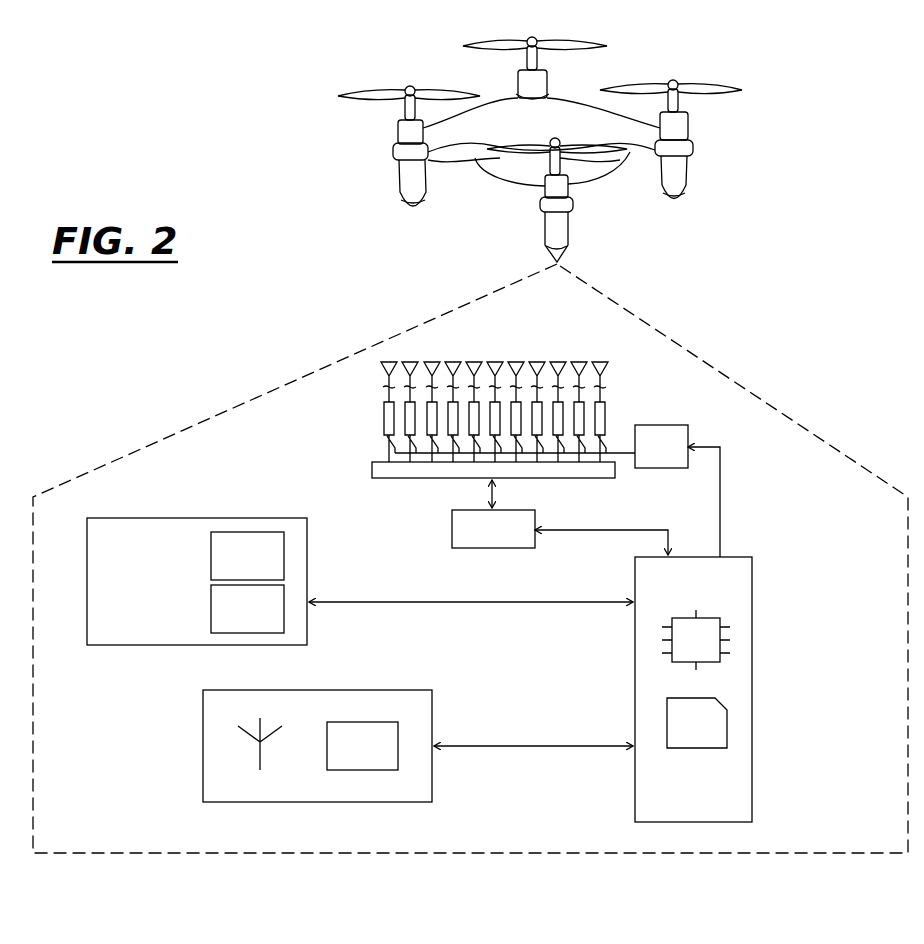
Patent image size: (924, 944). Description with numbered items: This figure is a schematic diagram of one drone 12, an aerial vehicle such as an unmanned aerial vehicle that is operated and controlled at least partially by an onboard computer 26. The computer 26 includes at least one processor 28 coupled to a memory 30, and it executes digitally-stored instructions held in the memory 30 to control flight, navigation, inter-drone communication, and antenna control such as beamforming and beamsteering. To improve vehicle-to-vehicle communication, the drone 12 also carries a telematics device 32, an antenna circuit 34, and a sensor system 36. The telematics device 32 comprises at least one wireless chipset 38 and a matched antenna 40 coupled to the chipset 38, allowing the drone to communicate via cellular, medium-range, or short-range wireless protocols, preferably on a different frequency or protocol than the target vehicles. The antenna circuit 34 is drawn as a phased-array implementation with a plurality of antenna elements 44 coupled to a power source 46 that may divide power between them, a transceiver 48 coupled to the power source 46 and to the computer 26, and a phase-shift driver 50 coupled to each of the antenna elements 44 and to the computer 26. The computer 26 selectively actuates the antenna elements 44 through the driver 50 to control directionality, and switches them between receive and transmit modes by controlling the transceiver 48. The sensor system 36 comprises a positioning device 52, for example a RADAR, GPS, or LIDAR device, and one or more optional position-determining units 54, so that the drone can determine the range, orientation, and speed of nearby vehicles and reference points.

The drone 12 is at (702, 223).
The computer 26 is at (752, 585).
The processor 28 is at (696, 640).
The memory 30 is at (697, 723).
The telematics device 32 is at (412, 690).
The antenna circuit 34 is at (370, 386).
The sensor system 36 is at (197, 581).
The wireless chipset 38 is at (362, 746).
The matched antenna 40 is at (257, 758).
The antenna elements 44 is at (474, 361).
The power source 46 is at (372, 468).
The transceiver 48 is at (493, 529).
The phase-shift driver 50 is at (661, 446).
The positioning device 52 is at (247, 556).
The position-determining units 54 is at (247, 609).